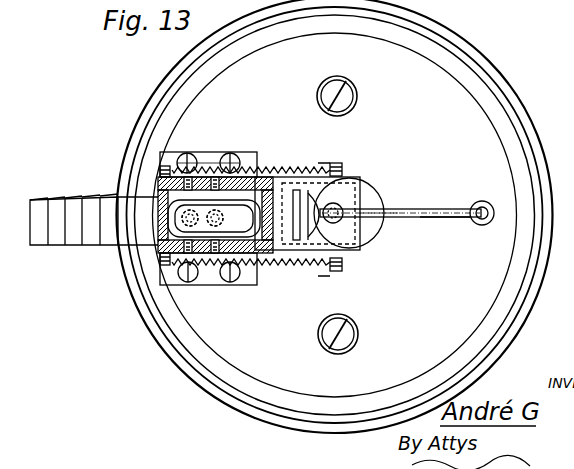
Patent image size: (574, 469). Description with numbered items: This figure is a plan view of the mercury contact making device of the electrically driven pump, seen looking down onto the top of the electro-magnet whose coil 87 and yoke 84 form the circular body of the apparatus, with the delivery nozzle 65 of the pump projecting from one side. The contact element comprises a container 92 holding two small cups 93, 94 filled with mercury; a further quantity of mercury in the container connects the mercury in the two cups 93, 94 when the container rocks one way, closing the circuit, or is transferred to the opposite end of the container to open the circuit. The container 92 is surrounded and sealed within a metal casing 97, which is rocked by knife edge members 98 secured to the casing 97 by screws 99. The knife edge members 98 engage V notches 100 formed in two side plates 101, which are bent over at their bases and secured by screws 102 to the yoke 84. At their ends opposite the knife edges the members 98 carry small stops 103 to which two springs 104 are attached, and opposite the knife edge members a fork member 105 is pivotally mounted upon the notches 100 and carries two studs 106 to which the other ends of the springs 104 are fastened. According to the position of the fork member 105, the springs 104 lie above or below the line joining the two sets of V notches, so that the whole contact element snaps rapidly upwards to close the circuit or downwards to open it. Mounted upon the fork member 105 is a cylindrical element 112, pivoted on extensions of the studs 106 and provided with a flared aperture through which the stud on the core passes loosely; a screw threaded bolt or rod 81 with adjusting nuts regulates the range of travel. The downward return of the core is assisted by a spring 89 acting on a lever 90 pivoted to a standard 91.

The delivery nozzle 65 is at (58, 200).
The screw threaded bolt or rod 81 is at (344, 222).
The yoke 84 is at (347, 203).
The coil 87 is at (337, 216).
The spring 89 is at (447, 218).
The lever 90 is at (444, 213).
The standard 91 is at (482, 201).
The container 92 is at (214, 218).
The small cup 93 is at (188, 222).
The small cup 94 is at (218, 222).
The metal casing 97 is at (160, 193).
The knife edge member 98 is at (257, 165).
The screw 99 is at (200, 178).
The V notch 100 is at (288, 167).
The side plate 101 is at (213, 157).
The screw 102 is at (234, 158).
The stop 103 is at (160, 165).
The spring 104 is at (318, 170).
The fork member 105 is at (369, 180).
The stud 106 is at (342, 167).
The cylindrical element 112 is at (398, 209).